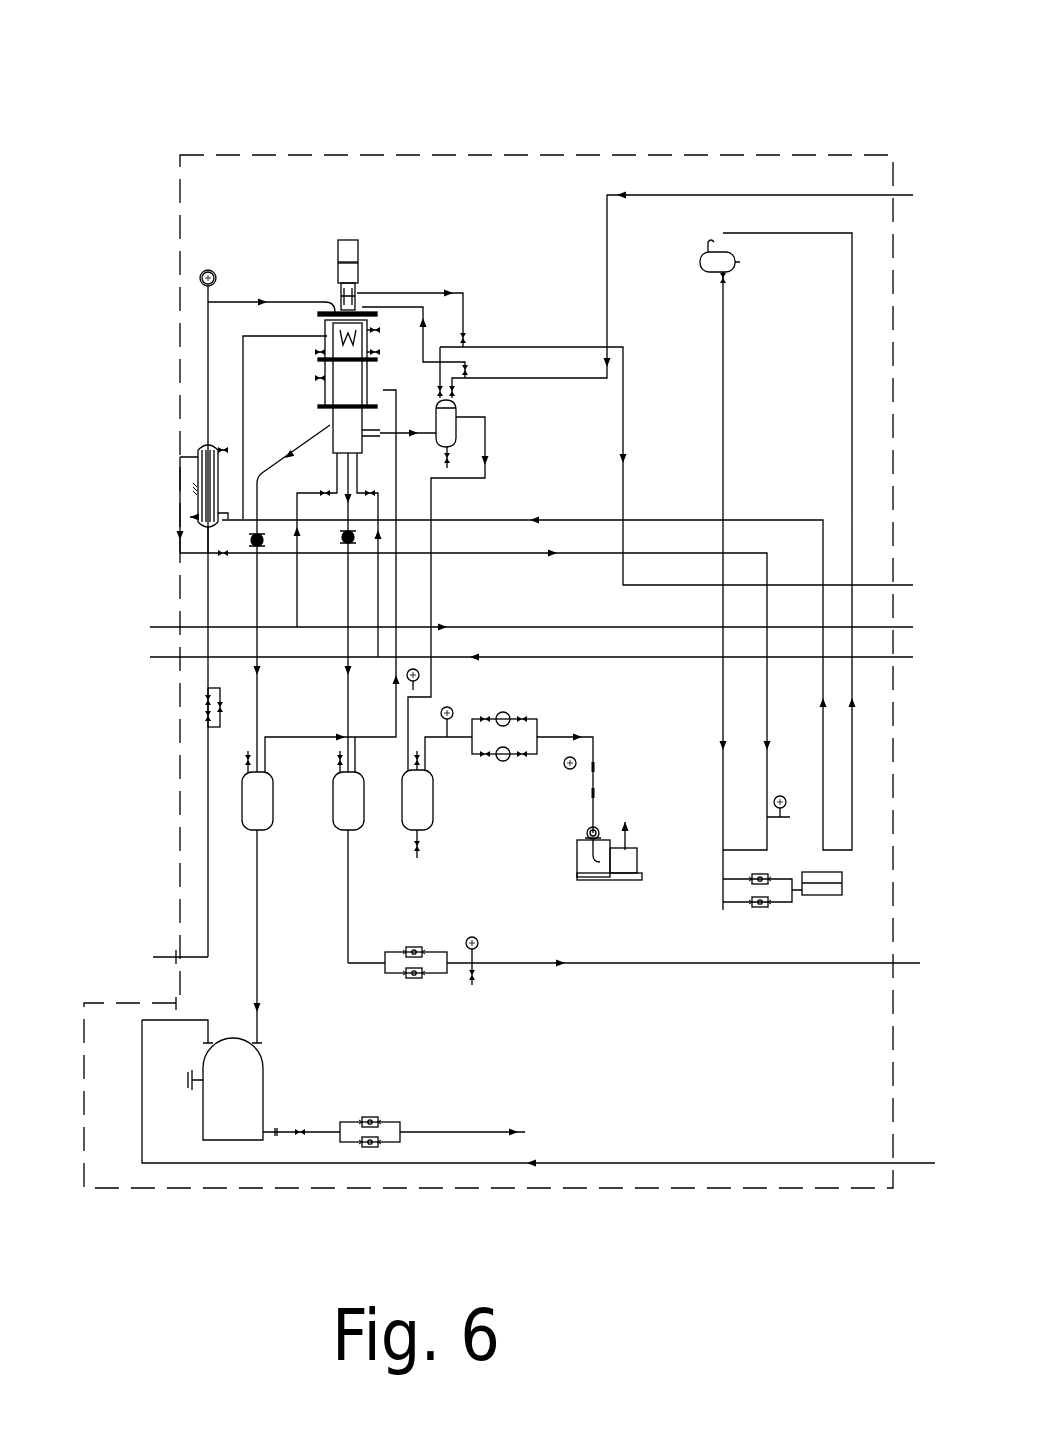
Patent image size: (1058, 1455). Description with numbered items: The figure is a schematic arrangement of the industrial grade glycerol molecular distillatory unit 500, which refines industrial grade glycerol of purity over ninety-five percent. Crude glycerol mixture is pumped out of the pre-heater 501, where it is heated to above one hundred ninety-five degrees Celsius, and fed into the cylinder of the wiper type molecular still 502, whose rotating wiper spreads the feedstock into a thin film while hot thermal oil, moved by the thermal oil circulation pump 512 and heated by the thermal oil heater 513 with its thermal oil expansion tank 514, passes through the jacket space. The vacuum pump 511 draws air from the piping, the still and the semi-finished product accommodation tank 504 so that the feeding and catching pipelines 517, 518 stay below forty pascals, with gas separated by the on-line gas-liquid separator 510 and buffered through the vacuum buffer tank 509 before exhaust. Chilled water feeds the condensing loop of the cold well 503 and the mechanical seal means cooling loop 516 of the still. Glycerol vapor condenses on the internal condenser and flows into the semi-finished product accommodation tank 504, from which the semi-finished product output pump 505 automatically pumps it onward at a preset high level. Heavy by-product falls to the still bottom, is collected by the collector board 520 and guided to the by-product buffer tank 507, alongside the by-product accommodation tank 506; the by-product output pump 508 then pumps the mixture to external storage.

The industrial grade glycerol molecular distillatory unit 500 is at (468, 153).
The pre-heater 501 is at (200, 447).
The wiper type molecular still 502 is at (362, 320).
The cold well 503 is at (455, 410).
The semi-finished product accommodation tank 504 is at (355, 813).
The semi-finished product output pump 505 is at (410, 980).
The by-product accommodation tank 506 is at (263, 813).
The by-product buffer tank 507 is at (250, 1097).
The by-product output pump 508 is at (377, 1122).
The vacuum buffer tank 509 is at (418, 807).
The on-line gas-liquid separator 510 is at (507, 717).
The vacuum pump 511 is at (593, 867).
The thermal oil circulation pump 512 is at (750, 907).
The thermal oil heater 513 is at (812, 890).
The thermal oil expansion tank 514 is at (700, 260).
The mechanical seal means cooling loop 516 is at (337, 293).
The feeding pipeline 517 is at (238, 297).
The catching pipeline 518 is at (325, 432).
The collector board 520 is at (327, 417).